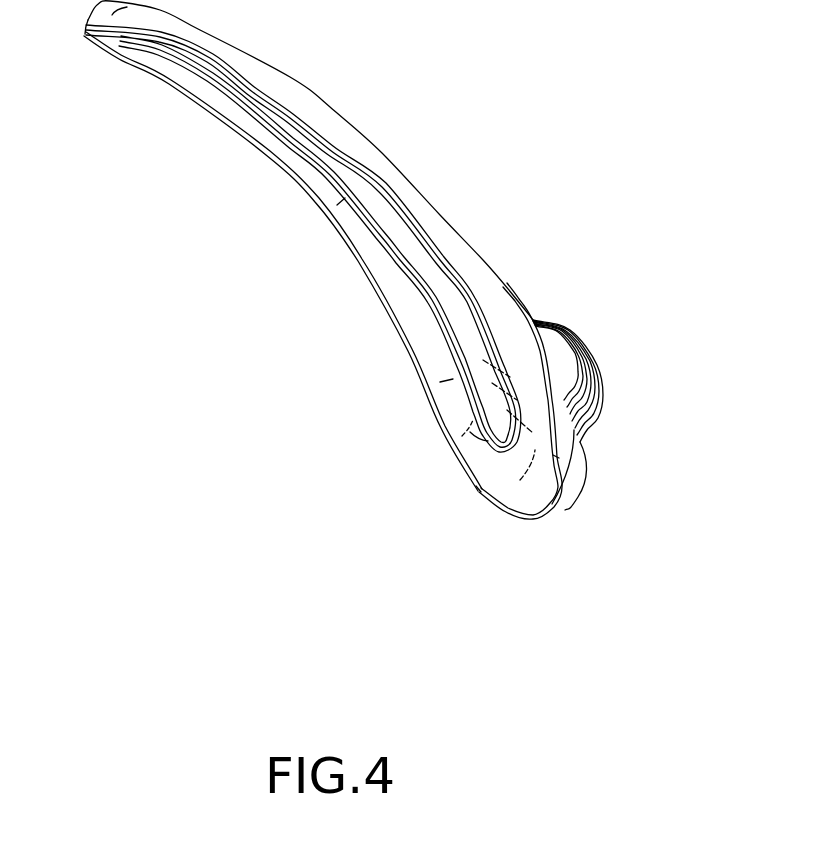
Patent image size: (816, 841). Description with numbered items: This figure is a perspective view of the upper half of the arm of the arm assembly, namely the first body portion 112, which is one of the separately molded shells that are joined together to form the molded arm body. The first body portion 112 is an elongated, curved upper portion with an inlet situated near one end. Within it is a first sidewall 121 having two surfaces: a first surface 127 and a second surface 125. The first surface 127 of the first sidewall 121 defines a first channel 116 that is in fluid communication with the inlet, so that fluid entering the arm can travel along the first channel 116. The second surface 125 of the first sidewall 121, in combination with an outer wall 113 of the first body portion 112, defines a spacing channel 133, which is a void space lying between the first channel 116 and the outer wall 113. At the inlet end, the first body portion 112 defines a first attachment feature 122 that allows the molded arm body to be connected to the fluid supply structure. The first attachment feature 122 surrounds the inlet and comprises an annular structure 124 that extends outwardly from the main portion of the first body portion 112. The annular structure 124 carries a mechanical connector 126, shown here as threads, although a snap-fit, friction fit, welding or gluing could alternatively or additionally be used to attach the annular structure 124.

The first body portion 112 is at (240, 265).
The outer wall 113 is at (417, 201).
The first channel 116 is at (440, 352).
The first sidewall 121 is at (427, 263).
The first attachment feature 122 is at (560, 308).
The annular structure 124 is at (590, 348).
The second surface 125 is at (477, 332).
The mechanical connector 126 is at (598, 396).
The first surface 127 is at (417, 283).
The spacing channel 133 is at (508, 492).